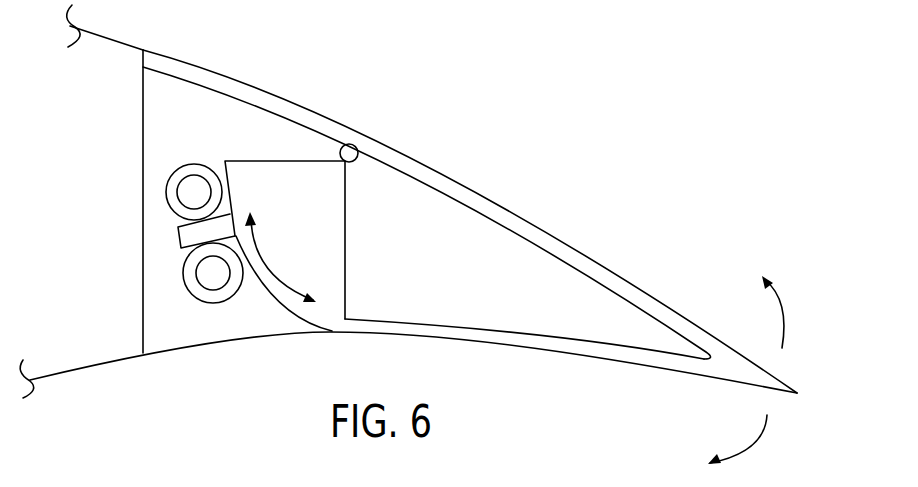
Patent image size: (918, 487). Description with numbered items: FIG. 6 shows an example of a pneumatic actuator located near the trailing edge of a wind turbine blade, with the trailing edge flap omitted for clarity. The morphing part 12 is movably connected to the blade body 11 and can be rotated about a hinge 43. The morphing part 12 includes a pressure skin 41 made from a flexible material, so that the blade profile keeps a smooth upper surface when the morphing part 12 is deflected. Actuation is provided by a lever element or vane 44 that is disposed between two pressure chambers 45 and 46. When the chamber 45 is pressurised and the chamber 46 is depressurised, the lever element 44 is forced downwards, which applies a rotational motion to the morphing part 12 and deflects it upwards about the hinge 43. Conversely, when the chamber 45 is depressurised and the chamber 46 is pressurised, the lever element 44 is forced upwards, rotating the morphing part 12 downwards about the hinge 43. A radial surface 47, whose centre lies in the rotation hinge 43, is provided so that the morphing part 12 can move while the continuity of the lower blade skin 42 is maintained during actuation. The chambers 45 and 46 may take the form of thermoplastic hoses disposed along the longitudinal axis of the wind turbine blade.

The blade body 11 is at (100, 56).
The morphing part 12 is at (608, 162).
The pressure skin 41 is at (291, 104).
The lower blade skin 42 is at (481, 345).
The hinge 43 is at (352, 146).
The lever element 44 is at (178, 237).
The pressure chamber 45 is at (194, 188).
The pressure chamber 46 is at (214, 275).
The radial surface 47 is at (283, 313).